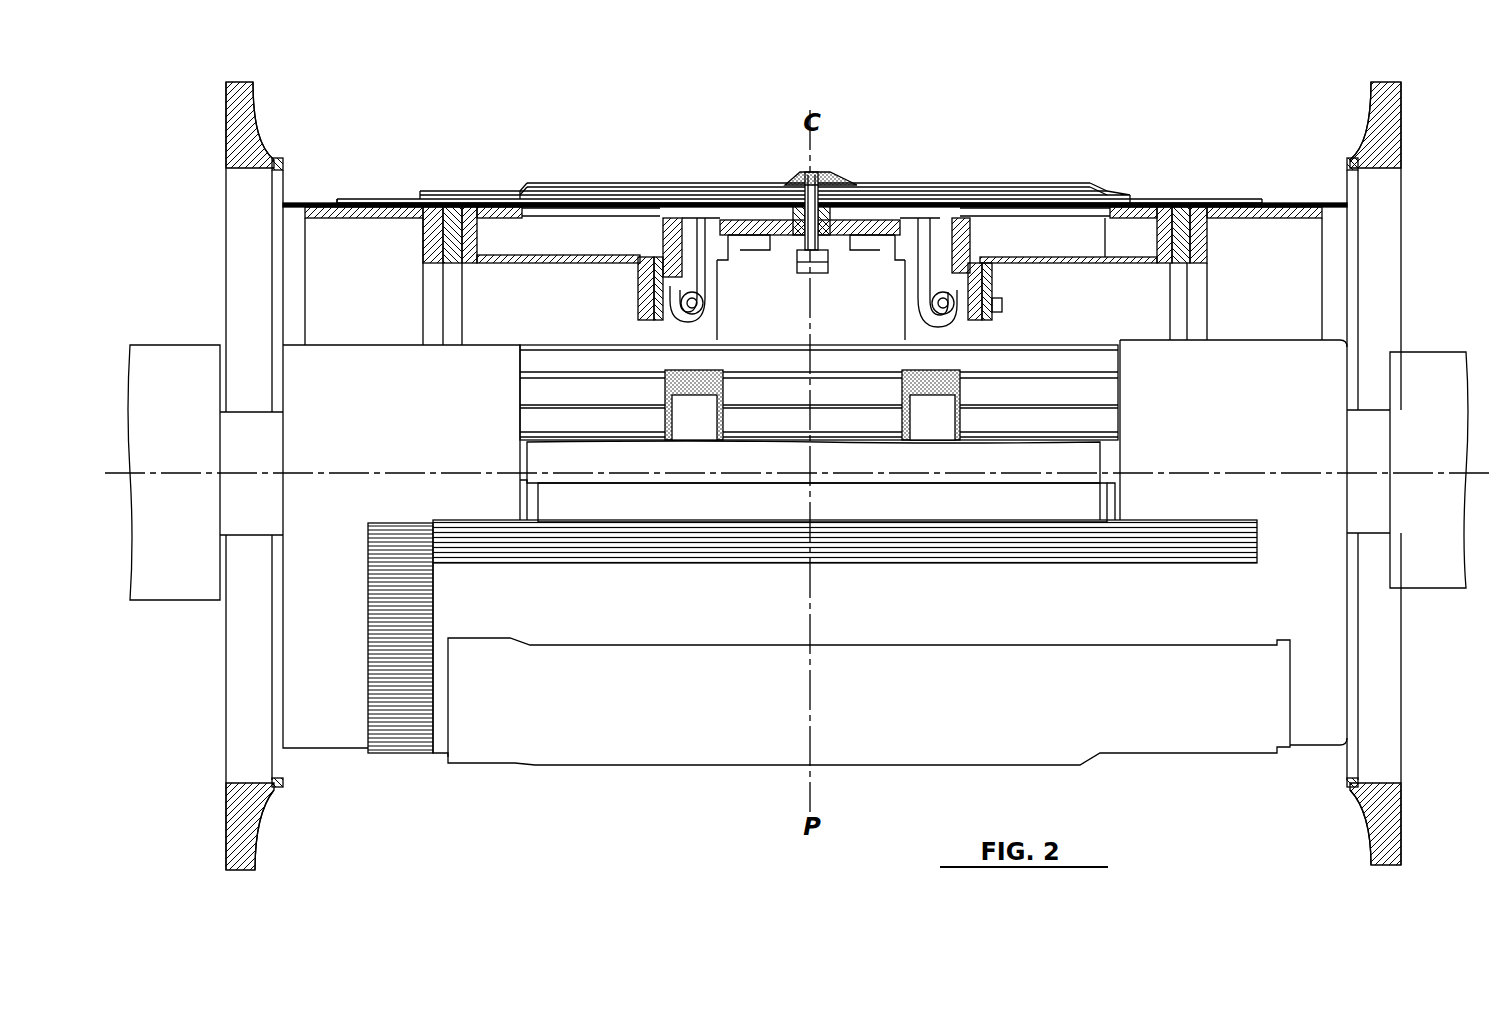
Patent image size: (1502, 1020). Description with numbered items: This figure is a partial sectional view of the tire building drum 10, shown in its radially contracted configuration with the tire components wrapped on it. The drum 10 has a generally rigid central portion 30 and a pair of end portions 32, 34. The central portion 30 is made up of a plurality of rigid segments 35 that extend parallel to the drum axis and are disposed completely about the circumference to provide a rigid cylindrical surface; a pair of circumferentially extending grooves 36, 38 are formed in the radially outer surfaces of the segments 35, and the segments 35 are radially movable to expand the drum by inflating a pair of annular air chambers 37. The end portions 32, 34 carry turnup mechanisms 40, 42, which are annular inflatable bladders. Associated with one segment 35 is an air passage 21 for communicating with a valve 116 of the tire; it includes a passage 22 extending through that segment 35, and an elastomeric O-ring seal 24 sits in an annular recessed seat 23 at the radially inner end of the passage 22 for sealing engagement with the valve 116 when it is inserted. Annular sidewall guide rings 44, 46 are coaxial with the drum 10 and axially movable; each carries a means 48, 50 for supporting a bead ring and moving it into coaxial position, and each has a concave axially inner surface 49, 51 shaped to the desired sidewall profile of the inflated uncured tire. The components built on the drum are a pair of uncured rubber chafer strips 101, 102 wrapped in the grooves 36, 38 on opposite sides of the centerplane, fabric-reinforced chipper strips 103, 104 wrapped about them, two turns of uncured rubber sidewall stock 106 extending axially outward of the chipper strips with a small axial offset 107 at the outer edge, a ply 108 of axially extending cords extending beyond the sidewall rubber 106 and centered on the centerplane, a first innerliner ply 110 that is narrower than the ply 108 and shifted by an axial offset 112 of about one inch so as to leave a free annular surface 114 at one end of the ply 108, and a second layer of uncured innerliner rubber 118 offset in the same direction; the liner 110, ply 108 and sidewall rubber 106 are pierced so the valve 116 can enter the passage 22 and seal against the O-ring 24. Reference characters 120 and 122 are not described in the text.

The tire building drum 10 is at (1300, 232).
The air passage 21 is at (822, 250).
The passage 22 is at (850, 200).
The annular recessed seat 23 is at (790, 180).
The elastomeric O-ring seal 24 is at (798, 236).
The central portion 30 is at (630, 199).
The end portion 32 is at (333, 218).
The end portion 34 is at (1230, 220).
The rigid segments 35 is at (592, 212).
The circumferentially extending groove 36 is at (665, 212).
The annular air chambers 37 is at (760, 237).
The circumferentially extending groove 38 is at (965, 205).
The turnup mechanism 40 is at (322, 200).
The turnup mechanism 42 is at (1340, 205).
The annular sidewall guide ring 44 is at (240, 82).
The annular sidewall guide ring 46 is at (1382, 82).
The bead ring supporting means 48 is at (277, 160).
The axially inner surface 49 is at (259, 108).
The bead ring supporting means 50 is at (1352, 162).
The axially inner surface 51 is at (1366, 126).
The uncured rubber chafer strip 101 is at (728, 205).
The uncured rubber chafer strip 102 is at (925, 205).
The fabric-reinforced chipper strip 103 is at (680, 205).
The fabric-reinforced chipper strip 104 is at (960, 207).
The uncured rubber sidewall stock 106 is at (1040, 198).
The axial offset 107 is at (523, 500).
The ply 108 is at (390, 199).
The first innerliner ply 110 is at (480, 191).
The axial offset 112 is at (1247, 197).
The free annular surface 114 is at (350, 197).
The valve 116 is at (813, 218).
The second layer of uncured innerliner rubber 118 is at (548, 183).
The left shaft line 120 is at (275, 172).
The right shaft line 122 is at (1354, 176).